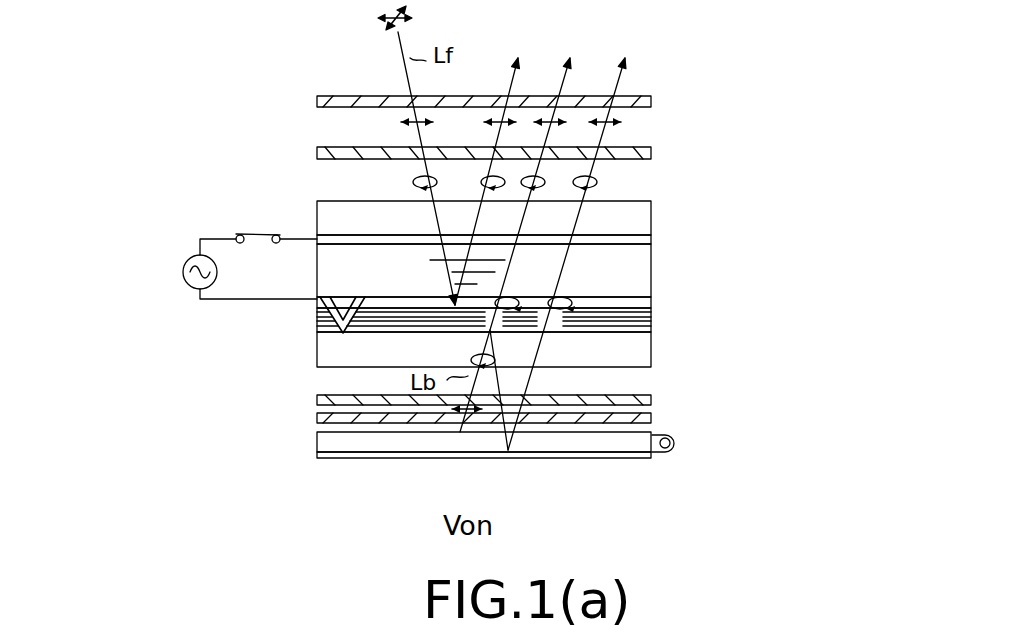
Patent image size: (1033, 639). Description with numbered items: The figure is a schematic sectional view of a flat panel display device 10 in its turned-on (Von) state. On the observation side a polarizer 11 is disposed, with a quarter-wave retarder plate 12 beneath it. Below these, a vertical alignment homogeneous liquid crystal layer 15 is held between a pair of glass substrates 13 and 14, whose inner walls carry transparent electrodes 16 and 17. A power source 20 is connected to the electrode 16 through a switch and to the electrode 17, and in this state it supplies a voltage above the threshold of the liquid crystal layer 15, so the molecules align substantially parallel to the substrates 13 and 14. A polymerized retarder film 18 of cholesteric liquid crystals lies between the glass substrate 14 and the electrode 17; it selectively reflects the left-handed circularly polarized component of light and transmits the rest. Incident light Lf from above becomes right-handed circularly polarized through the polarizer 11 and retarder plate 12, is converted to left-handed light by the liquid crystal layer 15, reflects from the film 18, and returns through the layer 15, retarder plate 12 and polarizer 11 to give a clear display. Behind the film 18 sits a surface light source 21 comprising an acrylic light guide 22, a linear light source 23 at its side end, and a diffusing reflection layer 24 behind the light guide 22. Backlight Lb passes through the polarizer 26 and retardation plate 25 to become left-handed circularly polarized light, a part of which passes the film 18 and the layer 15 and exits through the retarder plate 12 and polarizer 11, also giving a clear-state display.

The flat panel display device 10 is at (335, 78).
The polarizer 11 is at (652, 97).
The λ/4 retarder plate 12 is at (652, 150).
The glass substrate 13 is at (647, 216).
The glass substrate 14 is at (647, 364).
The vertical alignment homogeneous (VA) liquid crystal layer 15 is at (647, 269).
The transparent electrode 16 is at (647, 243).
The transparent electrode 17 is at (647, 301).
The polymerized retarder film of cholesteric liquid crystals 18 is at (647, 329).
The power source 20 is at (191, 290).
The surface light source 21 is at (687, 450).
The light guide 22 is at (645, 438).
The linear light source 23 is at (615, 455).
The diffusing reflection layer 24 is at (665, 452).
The retardation plate 25 is at (317, 400).
The polarizer 26 is at (317, 423).